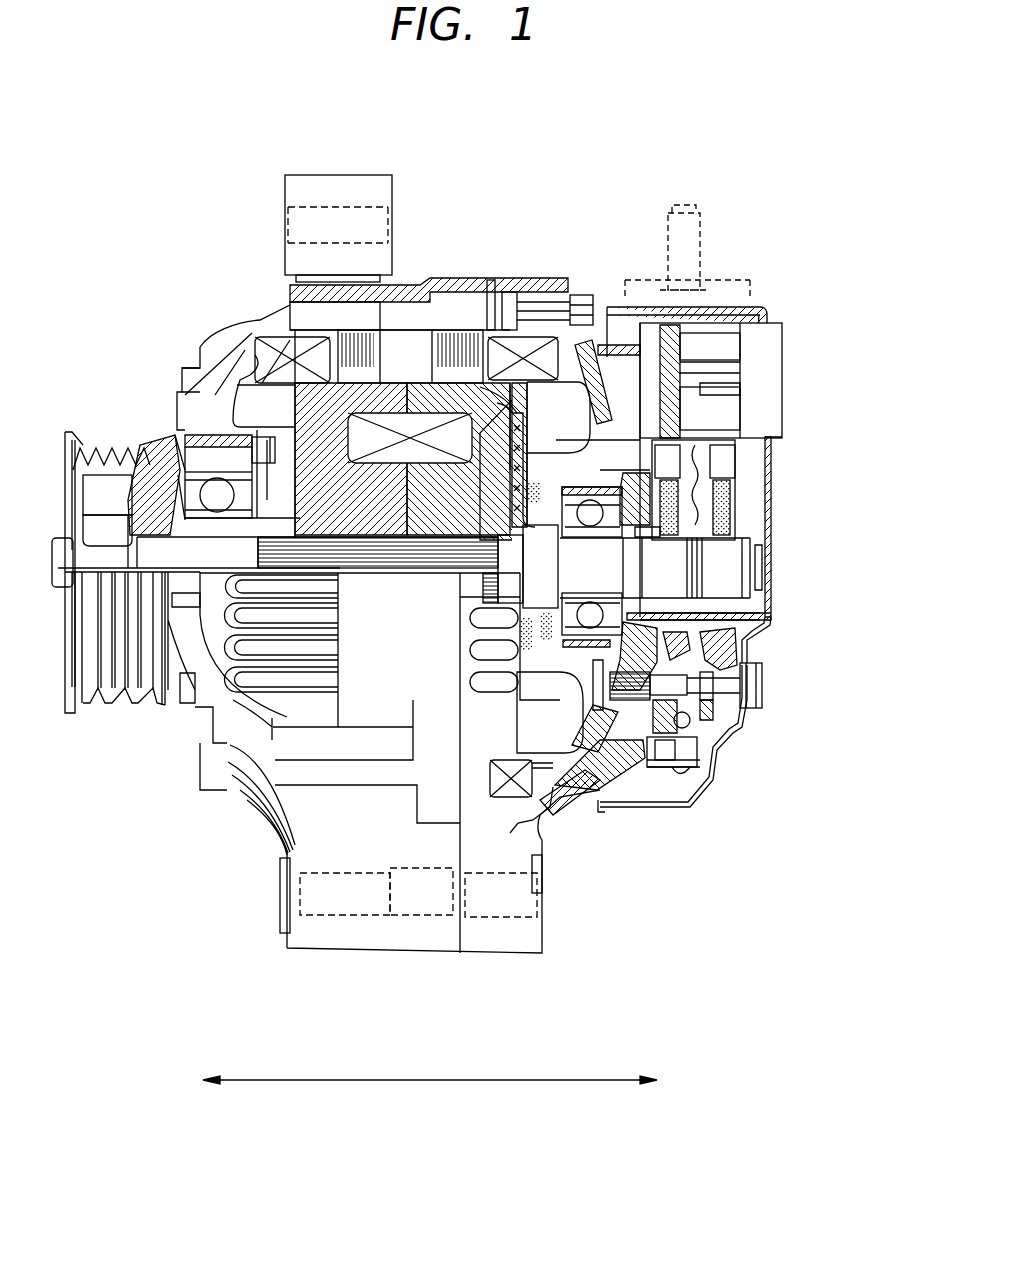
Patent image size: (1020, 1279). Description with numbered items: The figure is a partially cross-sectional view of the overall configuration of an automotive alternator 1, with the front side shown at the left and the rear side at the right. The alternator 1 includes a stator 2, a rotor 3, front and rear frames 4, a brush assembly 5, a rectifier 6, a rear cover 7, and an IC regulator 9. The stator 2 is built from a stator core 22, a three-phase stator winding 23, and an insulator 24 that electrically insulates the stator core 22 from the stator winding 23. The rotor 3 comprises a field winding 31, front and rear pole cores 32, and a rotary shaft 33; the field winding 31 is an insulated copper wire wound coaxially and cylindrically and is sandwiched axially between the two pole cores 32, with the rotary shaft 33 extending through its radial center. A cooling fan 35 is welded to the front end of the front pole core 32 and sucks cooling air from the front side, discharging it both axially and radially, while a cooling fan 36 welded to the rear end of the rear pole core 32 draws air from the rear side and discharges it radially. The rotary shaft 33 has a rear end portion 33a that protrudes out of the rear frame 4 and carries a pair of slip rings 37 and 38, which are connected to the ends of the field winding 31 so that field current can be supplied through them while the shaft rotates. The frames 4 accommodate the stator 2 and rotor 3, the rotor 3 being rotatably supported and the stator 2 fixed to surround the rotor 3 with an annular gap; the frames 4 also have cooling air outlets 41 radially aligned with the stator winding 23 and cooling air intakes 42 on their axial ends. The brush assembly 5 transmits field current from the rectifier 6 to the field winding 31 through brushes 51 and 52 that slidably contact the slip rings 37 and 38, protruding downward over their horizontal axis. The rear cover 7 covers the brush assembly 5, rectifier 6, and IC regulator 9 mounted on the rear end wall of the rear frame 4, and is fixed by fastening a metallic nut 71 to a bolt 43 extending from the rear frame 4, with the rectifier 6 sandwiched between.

The alternator 1 is at (592, 148).
The stator 2 is at (421, 318).
The rotor 3 is at (250, 403).
The front and rear frames 4 is at (300, 835).
The brush assembly 5 is at (752, 458).
The rectifier 6 is at (722, 742).
The rear cover 7 is at (707, 792).
The IC regulator 9 is at (764, 347).
The stator core 22 is at (437, 352).
The three-phase stator winding 23 is at (247, 370).
The insulator 24 is at (500, 305).
The field winding 31 is at (392, 426).
The front and rear pole cores 32 is at (323, 398).
The rotary shaft 33 is at (155, 547).
The rear end portion 33a is at (766, 616).
The cooling fan 35 is at (248, 443).
The cooling fan 36 is at (573, 403).
The slip ring 37 is at (673, 557).
The slip ring 38 is at (730, 582).
The cooling air outlets 41 is at (262, 681).
The cooling air intakes 42 is at (188, 412).
The bolt 43 is at (635, 692).
The brush 51 is at (733, 507).
The brush 52 is at (727, 527).
The metallic nut 71 is at (750, 700).